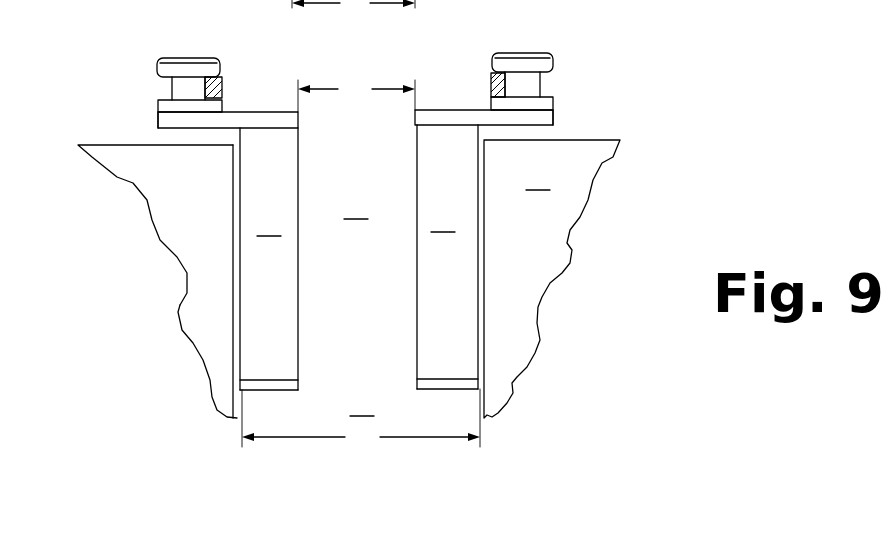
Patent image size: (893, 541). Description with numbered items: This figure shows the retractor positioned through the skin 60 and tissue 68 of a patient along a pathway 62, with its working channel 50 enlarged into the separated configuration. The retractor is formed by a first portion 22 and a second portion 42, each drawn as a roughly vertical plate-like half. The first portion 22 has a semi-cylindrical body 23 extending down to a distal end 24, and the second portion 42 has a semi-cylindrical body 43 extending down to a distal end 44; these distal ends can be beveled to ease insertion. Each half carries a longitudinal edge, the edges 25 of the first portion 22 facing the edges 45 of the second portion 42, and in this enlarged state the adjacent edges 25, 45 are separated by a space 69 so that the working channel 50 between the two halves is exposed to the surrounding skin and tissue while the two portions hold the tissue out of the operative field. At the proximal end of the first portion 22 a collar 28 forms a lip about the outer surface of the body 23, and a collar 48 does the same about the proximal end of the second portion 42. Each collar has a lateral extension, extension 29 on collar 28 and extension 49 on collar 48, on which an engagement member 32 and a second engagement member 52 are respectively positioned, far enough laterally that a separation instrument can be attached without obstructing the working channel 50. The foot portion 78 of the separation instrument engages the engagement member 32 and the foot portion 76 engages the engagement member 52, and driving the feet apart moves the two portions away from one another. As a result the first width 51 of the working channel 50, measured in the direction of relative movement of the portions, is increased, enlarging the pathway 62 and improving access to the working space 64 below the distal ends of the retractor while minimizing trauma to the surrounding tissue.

The first portion 22 is at (478, 328).
The semi-cylindrical body 23 is at (479, 261).
The distal end 24 is at (430, 389).
The longitudinal edges 25 is at (417, 288).
The collar 28 is at (250, 118).
The lateral extension 29 is at (553, 116).
The engagement member 32 is at (532, 53).
The second portion 42 is at (240, 338).
The semi-cylindrical body 43 is at (241, 262).
The distal end 44 is at (279, 388).
The longitudinal edges 45 is at (292, 285).
The collar 48 is at (437, 118).
The lateral extension 49 is at (158, 120).
The working channel 50 is at (357, 208).
The first width 51 is at (361, 225).
The second engagement member 52 is at (178, 56).
The skin 60 is at (117, 144).
The pathway 62 is at (210, 380).
The working space 64 is at (363, 405).
The tissue 68 is at (552, 279).
The space 69 is at (356, 95).
The foot portion 76 is at (223, 90).
The foot portion 78 is at (491, 90).